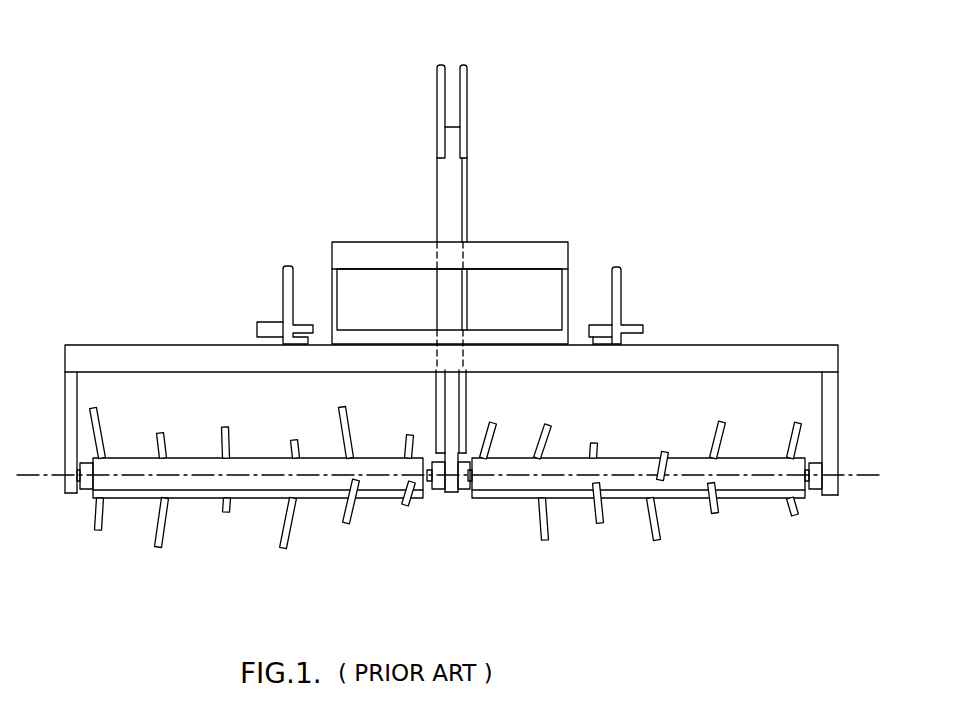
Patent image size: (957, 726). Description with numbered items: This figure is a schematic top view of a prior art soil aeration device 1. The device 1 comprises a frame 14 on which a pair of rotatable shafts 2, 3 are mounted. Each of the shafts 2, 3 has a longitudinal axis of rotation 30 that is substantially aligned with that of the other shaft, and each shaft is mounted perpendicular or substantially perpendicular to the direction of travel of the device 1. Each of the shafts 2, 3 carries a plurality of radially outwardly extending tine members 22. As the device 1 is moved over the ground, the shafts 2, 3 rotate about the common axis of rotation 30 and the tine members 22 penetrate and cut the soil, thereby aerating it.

The soil aeration device 1 is at (662, 232).
The frame 14 is at (785, 355).
The rotatable shaft 2 is at (383, 490).
The rotatable shaft 3 is at (752, 493).
The tine members 22 is at (343, 420).
The longitudinal axis of rotation 30 is at (863, 478).